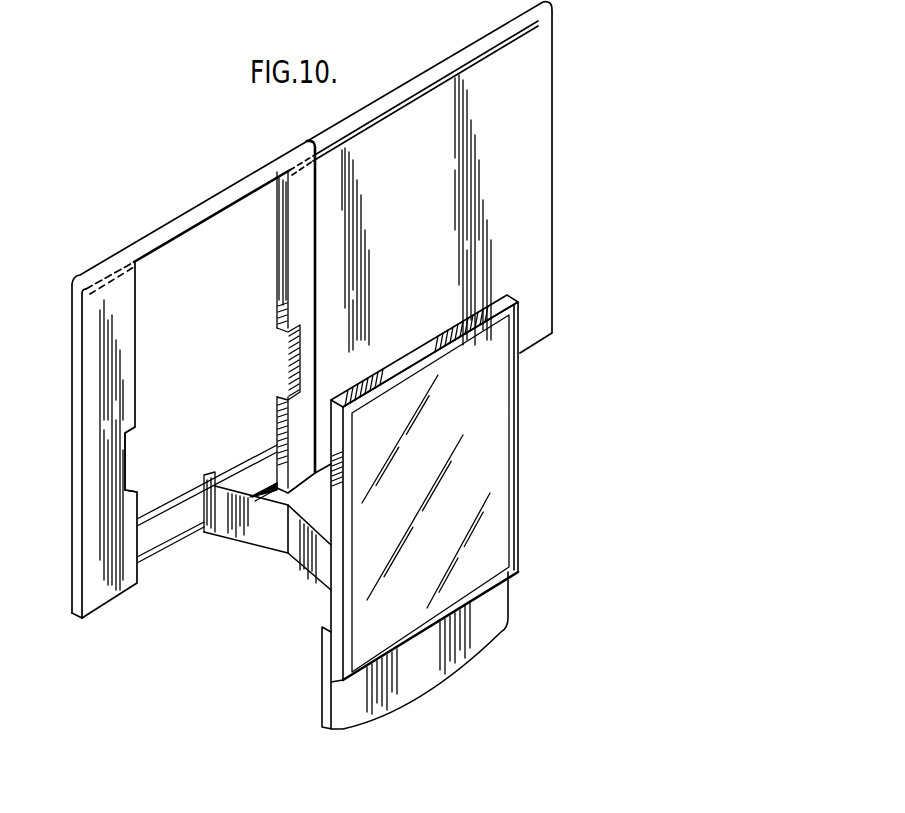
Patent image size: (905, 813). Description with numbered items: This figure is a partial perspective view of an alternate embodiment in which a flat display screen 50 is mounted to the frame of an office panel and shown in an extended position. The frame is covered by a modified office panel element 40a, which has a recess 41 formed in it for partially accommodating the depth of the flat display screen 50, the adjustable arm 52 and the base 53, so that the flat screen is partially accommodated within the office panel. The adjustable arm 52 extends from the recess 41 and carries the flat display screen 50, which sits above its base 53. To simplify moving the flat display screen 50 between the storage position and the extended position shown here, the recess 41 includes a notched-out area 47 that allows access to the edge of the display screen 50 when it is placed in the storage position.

The modified office panel element 40a is at (528, 208).
The recess 41 is at (217, 249).
The notched-out area 47 is at (283, 355).
The flat display screen 50 is at (471, 393).
The adjustable arm 52 is at (253, 545).
The base 53 is at (473, 630).